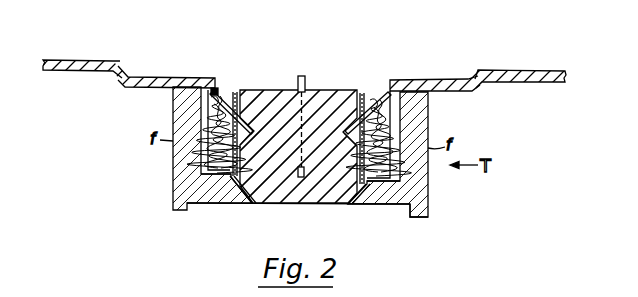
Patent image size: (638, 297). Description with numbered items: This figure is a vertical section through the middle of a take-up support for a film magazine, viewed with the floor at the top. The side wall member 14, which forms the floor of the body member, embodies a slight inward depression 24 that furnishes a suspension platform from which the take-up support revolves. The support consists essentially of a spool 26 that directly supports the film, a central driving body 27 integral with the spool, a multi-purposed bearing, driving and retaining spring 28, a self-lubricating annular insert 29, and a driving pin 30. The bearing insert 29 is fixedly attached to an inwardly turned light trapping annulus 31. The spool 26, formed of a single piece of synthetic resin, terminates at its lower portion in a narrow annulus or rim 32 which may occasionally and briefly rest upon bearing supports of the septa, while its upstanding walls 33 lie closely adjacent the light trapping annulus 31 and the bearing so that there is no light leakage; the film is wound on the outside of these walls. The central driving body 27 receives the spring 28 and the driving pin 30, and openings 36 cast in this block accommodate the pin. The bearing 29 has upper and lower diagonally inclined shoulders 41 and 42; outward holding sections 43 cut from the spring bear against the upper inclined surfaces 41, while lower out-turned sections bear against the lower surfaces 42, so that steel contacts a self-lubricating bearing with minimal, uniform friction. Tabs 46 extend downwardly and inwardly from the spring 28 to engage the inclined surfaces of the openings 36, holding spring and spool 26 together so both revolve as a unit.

The side wall member 14 is at (532, 75).
The inward depression 24 is at (446, 80).
The spool 26 is at (420, 182).
The central driving body 27 is at (320, 92).
The multi-purposed spring 28 is at (238, 92).
The self-lubricating annular insert 29 is at (385, 95).
The driving pin 30 is at (302, 76).
The light trapping annulus 31 is at (213, 88).
The annulus or rim 32 is at (410, 217).
The upstanding walls 33 is at (424, 115).
The openings 36 is at (231, 195).
The upper inclined shoulder 41 is at (218, 87).
The lower inclined shoulder 42 is at (214, 172).
The outward holding sections 43 is at (227, 97).
The tabs 46 is at (246, 203).